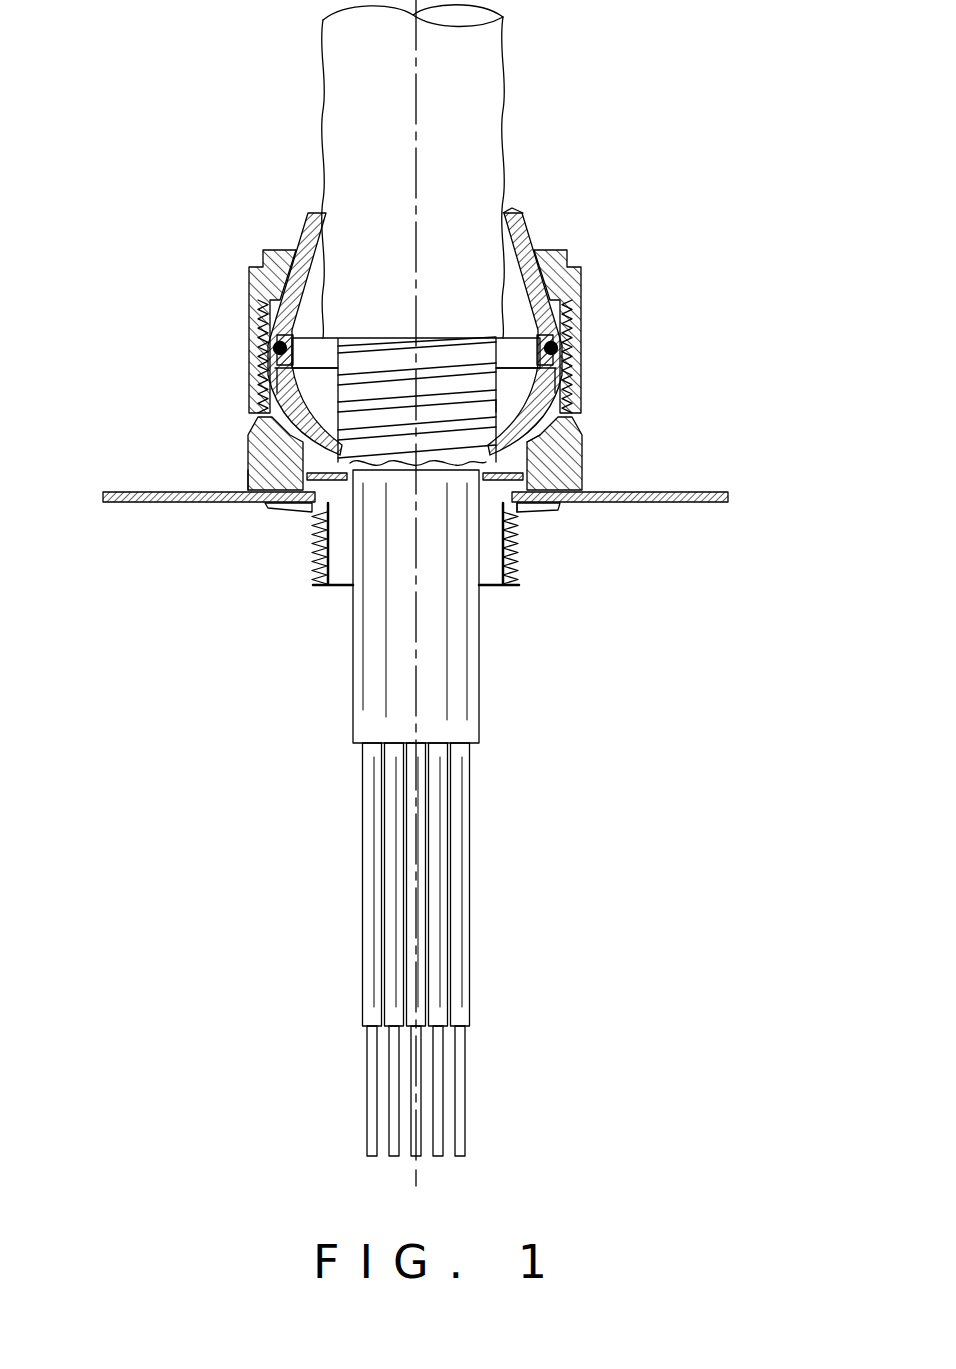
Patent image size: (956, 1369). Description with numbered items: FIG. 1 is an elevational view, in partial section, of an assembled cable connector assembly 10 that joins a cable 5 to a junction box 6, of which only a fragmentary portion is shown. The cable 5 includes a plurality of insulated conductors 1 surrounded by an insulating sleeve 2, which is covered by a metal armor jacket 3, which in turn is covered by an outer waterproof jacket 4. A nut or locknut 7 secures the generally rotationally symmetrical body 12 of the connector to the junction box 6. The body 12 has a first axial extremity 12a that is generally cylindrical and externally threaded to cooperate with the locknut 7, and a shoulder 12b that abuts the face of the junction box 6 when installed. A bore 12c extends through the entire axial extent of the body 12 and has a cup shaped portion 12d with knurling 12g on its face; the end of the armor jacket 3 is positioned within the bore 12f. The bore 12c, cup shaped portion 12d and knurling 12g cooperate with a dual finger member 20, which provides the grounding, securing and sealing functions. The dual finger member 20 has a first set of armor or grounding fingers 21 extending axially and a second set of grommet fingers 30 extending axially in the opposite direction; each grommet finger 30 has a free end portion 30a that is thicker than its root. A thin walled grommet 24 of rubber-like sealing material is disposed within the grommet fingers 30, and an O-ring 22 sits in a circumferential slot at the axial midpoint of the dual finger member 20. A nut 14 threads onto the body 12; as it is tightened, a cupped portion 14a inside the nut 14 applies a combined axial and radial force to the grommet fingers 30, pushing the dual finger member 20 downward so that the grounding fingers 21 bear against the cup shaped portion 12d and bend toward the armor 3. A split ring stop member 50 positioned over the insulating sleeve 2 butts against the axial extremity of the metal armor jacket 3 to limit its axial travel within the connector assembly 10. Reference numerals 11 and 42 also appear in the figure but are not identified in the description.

The insulated conductors 1 is at (375, 973).
The insulating sleeve 2 is at (373, 710).
The metal armor jacket 3 is at (384, 363).
The outer waterproof jacket 4 is at (460, 122).
The cable 5 is at (288, 73).
The junction box 6 is at (123, 490).
The nut or locknut 7 is at (292, 505).
The cable connector assembly 10 is at (233, 345).
The sealing ring 11 is at (560, 439).
The body 12 is at (245, 446).
The first axial extremity 12a is at (520, 585).
The shoulder 12b is at (533, 500).
The bore 12c is at (565, 392).
The cup shaped portion 12d is at (280, 391).
The bore 12f is at (337, 583).
The knurling 12g is at (297, 420).
The nut 14 is at (250, 270).
The cupped portion 14a is at (263, 248).
The dual finger member 20 is at (550, 358).
The grounding fingers 21 is at (538, 512).
The O-ring 22 is at (560, 343).
The thin walled grommet 24 is at (521, 208).
The grommet fingers 30 is at (575, 268).
The free end portion 30a is at (527, 232).
The inner thread 42 is at (513, 405).
The split ring stop member 50 is at (500, 477).